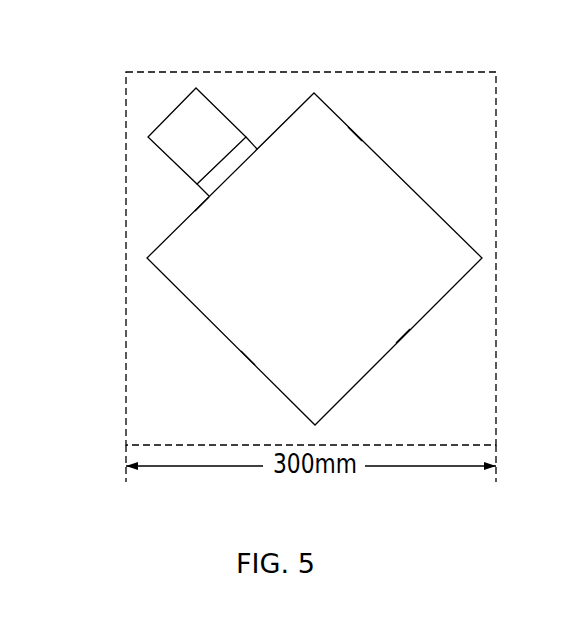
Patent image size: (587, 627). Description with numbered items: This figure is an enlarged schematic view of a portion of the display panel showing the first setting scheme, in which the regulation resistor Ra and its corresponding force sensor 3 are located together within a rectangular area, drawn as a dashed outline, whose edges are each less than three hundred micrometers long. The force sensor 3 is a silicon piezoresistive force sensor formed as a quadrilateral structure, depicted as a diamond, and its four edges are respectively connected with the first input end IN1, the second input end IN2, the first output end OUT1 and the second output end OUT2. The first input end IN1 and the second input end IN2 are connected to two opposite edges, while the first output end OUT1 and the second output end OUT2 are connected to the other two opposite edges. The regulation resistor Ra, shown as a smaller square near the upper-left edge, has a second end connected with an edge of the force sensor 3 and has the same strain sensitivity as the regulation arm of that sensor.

The force sensor 3 is at (330, 219).
The regulation resistor Ra is at (207, 117).
The first input end IN1 is at (208, 203).
The second input end IN2 is at (393, 338).
The first output end OUT1 is at (255, 358).
The second output end OUT2 is at (350, 147).